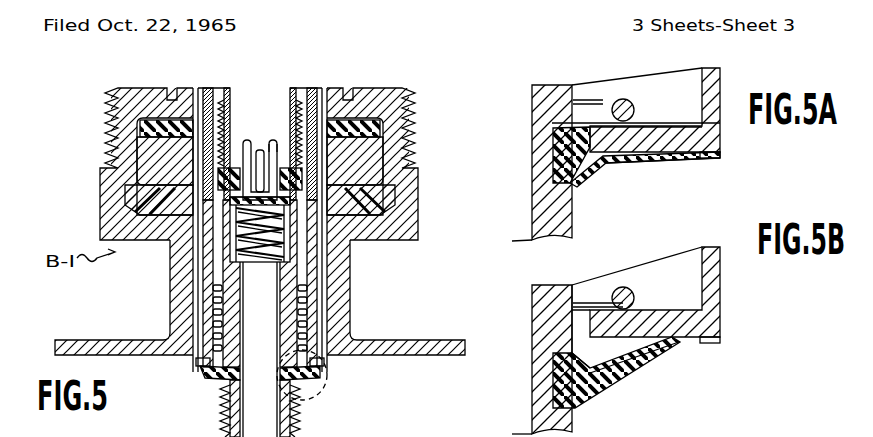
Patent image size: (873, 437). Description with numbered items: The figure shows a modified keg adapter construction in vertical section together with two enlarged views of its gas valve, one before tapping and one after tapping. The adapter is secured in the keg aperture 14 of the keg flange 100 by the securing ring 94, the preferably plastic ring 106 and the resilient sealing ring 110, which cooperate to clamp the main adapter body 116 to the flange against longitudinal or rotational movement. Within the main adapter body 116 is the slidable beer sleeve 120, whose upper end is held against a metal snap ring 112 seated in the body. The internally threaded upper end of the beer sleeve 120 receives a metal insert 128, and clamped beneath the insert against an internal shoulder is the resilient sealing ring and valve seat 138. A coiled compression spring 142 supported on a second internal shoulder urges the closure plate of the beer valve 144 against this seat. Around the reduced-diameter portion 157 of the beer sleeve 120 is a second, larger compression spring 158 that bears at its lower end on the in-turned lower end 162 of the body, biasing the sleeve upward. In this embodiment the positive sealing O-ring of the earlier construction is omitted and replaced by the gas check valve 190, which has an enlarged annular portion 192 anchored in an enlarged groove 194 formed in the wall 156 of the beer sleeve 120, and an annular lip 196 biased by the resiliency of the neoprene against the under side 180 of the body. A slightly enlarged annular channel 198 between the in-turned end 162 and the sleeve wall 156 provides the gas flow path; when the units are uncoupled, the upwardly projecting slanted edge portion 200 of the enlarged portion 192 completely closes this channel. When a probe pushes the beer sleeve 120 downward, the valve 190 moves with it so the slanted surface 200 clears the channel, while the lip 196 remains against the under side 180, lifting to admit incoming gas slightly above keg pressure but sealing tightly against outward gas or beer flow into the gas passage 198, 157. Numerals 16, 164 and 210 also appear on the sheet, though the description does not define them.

In FIG. 5, the keg opening 14 is at (338, 360).
In FIG. 5, the mounting flange 16 is at (427, 343).
In FIG. 5, the securing ring 94 is at (410, 107).
In FIG. 5, the keg flange 100 is at (338, 258).
In FIG. 5, the ring 106 is at (130, 205).
In FIG. 5, the resilient sealing ring 110 is at (183, 115).
In FIG. 5, the snap ring 112 is at (312, 88).
In FIG. 5, the main adapter body 116 is at (315, 150).
In FIG. 5A, the main adapter body 116 is at (712, 85).
In FIG. 5B, the main adapter body 116 is at (710, 288).
In FIG. 5, the beer sleeve 120 is at (230, 322).
In FIG. 5A, the beer sleeve 120 is at (555, 212).
In FIG. 5B, the beer sleeve 120 is at (573, 415).
In FIG. 5, the metal insert 128 is at (220, 93).
In FIG. 5, the sealing ring and valve seat 138 is at (233, 167).
In FIG. 5, the coiled compression spring 142 is at (260, 245).
In FIG. 5, the beer valve 144 is at (273, 143).
In FIG. 5A, the sleeve wall 156 is at (543, 100).
In FIG. 5B, the sleeve wall 156 is at (543, 320).
In FIG. 5, the reduced-diameter portion of the beer sleeve 157 is at (213, 260).
In FIG. 5, the second coiled compression spring 158 is at (203, 360).
In FIG. 5A, the second coiled compression spring 158 is at (618, 102).
In FIG. 5B, the second coiled compression spring 158 is at (627, 300).
In FIG. 5A, the in-turned lower end of the body 162 is at (650, 125).
In FIG. 5, the lower tube 164 is at (287, 349).
In FIG. 5A, the under side of adapter body 180 is at (683, 158).
In FIG. 5B, the under side of adapter body 180 is at (647, 363).
In FIG. 5, the gas check valve 190 is at (223, 377).
In FIG. 5A, the gas check valve 190 is at (605, 157).
In FIG. 5B, the gas check valve 190 is at (613, 373).
In FIG. 5A, the enlarged annular portion 192 is at (565, 155).
In FIG. 5B, the enlarged annular portion 192 is at (560, 383).
In FIG. 5A, the enlarged groove 194 is at (562, 170).
In FIG. 5A, the annular lip 196 is at (700, 158).
In FIG. 5B, the annular lip 196 is at (703, 343).
In FIG. 5A, the annular channel 198 is at (585, 125).
In FIG. 5B, the annular channel 198 is at (580, 320).
In FIG. 5A, the slanted edge portion 200 is at (570, 123).
In FIG. 5B, the slanted edge portion 200 is at (578, 360).
In FIG. 5B, the lower seat 210 is at (700, 433).